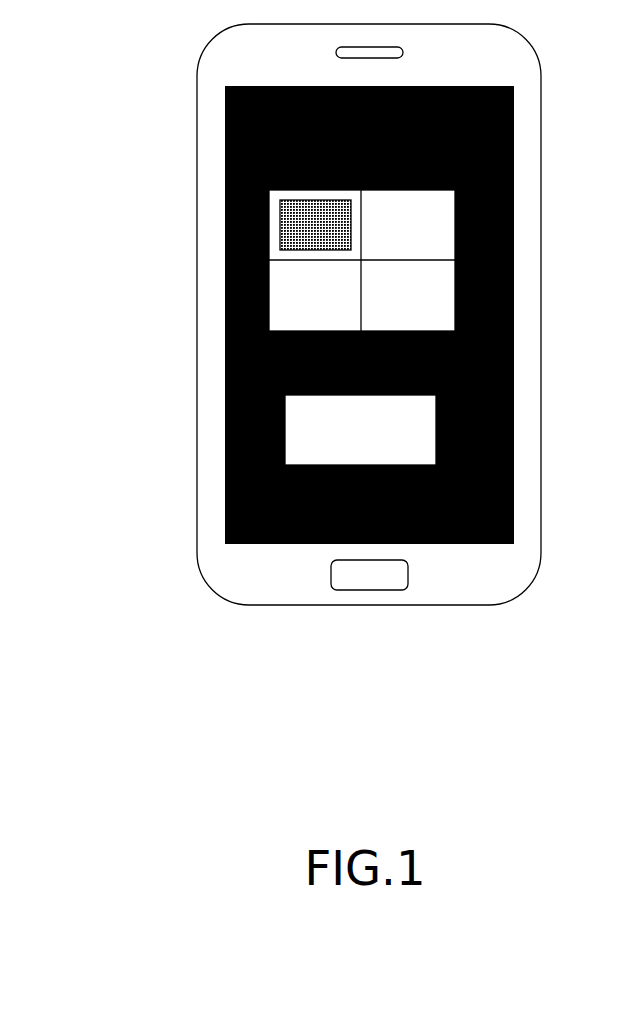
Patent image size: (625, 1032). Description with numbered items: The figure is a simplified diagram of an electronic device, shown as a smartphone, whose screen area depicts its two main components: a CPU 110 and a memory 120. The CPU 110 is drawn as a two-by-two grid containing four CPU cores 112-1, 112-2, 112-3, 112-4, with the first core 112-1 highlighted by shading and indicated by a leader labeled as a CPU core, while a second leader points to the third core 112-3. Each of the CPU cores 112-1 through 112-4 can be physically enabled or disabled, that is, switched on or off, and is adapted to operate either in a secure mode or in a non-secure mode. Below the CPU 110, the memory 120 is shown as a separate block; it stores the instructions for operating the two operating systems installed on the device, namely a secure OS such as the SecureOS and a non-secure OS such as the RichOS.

The CPU 110 is at (246, 329).
The CPU core 112-1 is at (286, 212).
The CPU core 112-2 is at (373, 228).
The CPU core 112-3 is at (288, 300).
The CPU core 112-4 is at (373, 300).
The memory 120 is at (360, 430).